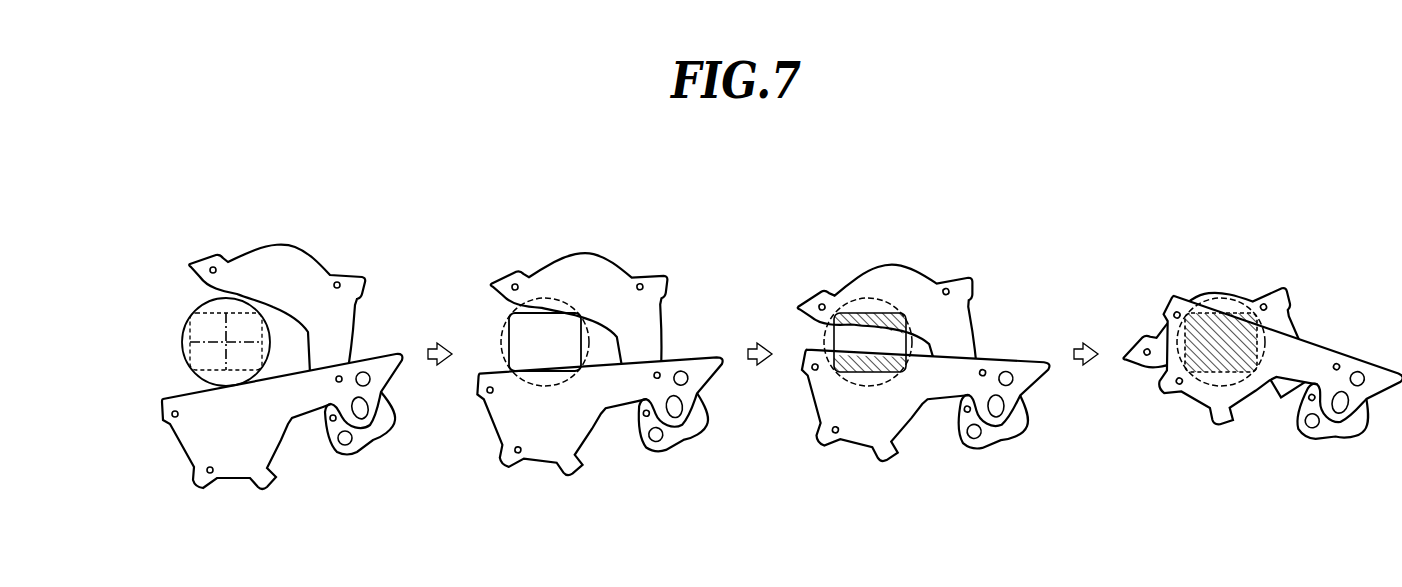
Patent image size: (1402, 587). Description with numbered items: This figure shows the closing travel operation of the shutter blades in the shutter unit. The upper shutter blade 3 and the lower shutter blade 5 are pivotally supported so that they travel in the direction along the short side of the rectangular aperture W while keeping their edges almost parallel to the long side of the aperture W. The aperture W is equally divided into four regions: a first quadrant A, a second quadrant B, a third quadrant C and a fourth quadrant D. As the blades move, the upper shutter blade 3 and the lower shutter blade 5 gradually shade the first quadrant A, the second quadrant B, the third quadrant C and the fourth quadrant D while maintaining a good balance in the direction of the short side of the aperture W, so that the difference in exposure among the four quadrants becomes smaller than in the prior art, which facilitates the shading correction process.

The upper shutter blade 3 is at (345, 318).
The lower shutter blade 5 is at (160, 414).
The aperture W is at (192, 337).
The first quadrant A is at (247, 326).
The second quadrant B is at (194, 322).
The third quadrant C is at (217, 362).
The fourth quadrant D is at (240, 362).